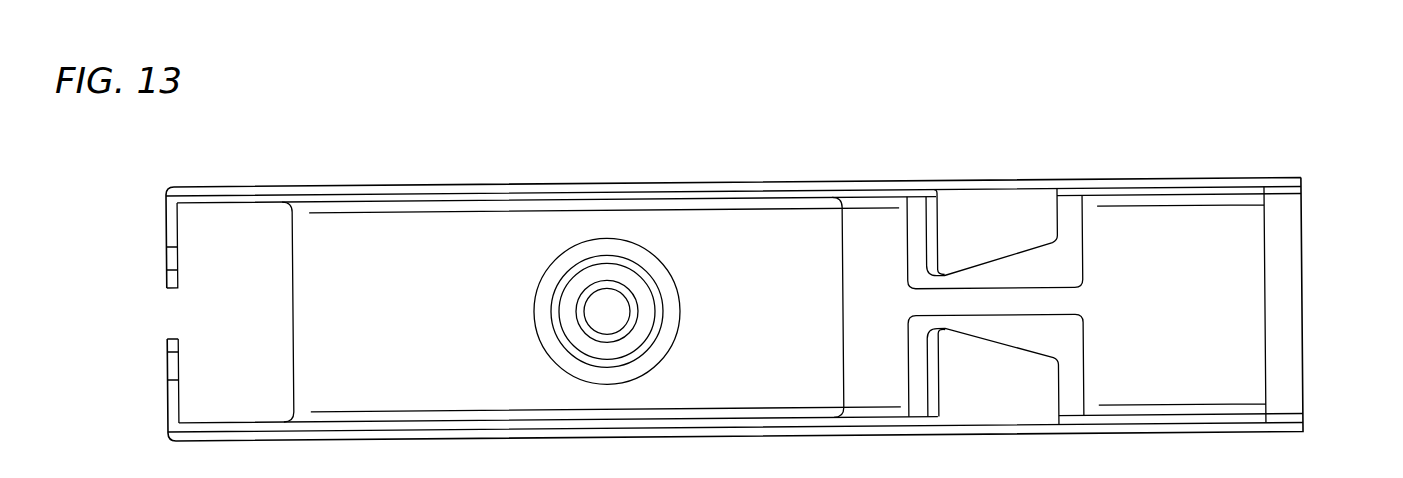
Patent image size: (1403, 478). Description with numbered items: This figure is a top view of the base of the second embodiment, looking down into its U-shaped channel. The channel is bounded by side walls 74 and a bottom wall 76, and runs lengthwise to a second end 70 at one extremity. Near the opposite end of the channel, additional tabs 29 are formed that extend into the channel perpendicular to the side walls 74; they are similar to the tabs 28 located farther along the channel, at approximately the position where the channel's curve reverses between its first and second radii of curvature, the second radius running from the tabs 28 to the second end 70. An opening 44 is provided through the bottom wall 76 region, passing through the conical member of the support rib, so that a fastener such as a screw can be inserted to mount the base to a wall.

The tabs 28 is at (997, 222).
The additional tabs 29 is at (165, 232).
The opening 44 is at (605, 304).
The second end 70 is at (1303, 292).
The side walls 74 is at (701, 188).
The bottom wall 76 is at (770, 305).